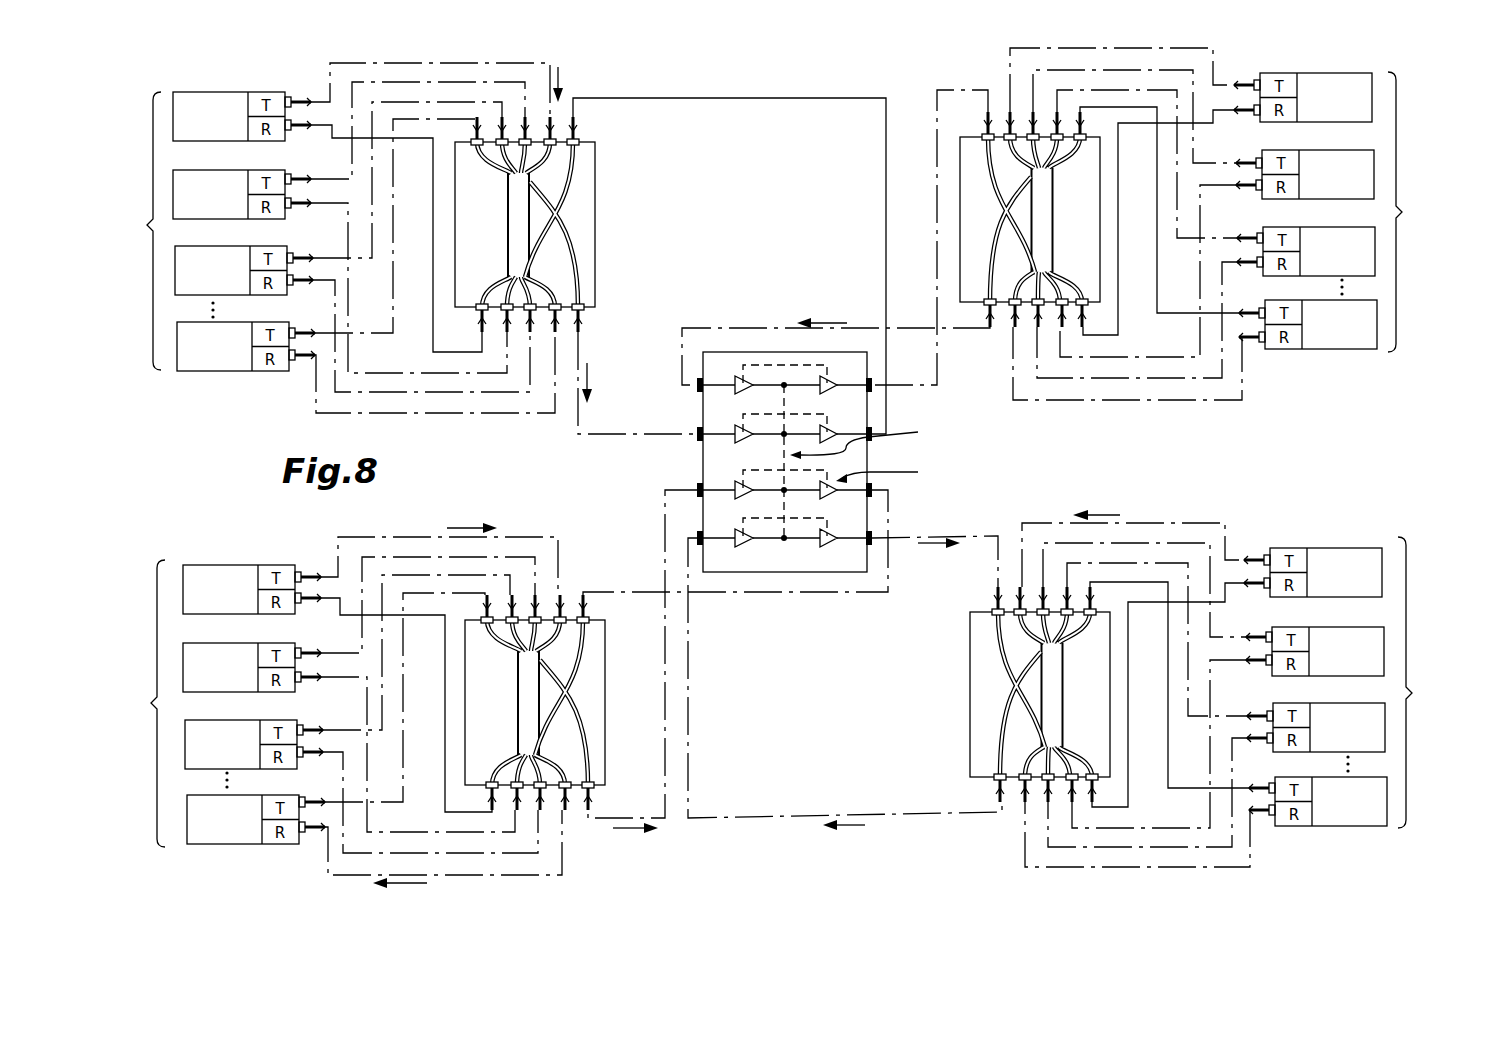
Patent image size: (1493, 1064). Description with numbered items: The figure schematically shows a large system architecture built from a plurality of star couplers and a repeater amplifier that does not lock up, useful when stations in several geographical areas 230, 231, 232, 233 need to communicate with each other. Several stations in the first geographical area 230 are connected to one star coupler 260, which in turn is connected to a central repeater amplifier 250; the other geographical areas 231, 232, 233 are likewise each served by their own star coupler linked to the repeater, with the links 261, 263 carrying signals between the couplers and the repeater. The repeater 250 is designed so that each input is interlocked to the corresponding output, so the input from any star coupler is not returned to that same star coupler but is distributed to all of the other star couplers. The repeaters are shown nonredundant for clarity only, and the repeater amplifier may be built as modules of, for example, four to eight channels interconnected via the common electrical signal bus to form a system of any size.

The first geographical area 230 is at (147, 225).
The geographical area 231 is at (151, 703).
The geographical area 232 is at (1402, 212).
The geographical area 233 is at (1412, 693).
The central repeater amplifier 250 is at (786, 576).
The star coupler 260 is at (520, 413).
The optical fiber link 261 is at (567, 575).
The optical fiber link 263 is at (1170, 522).